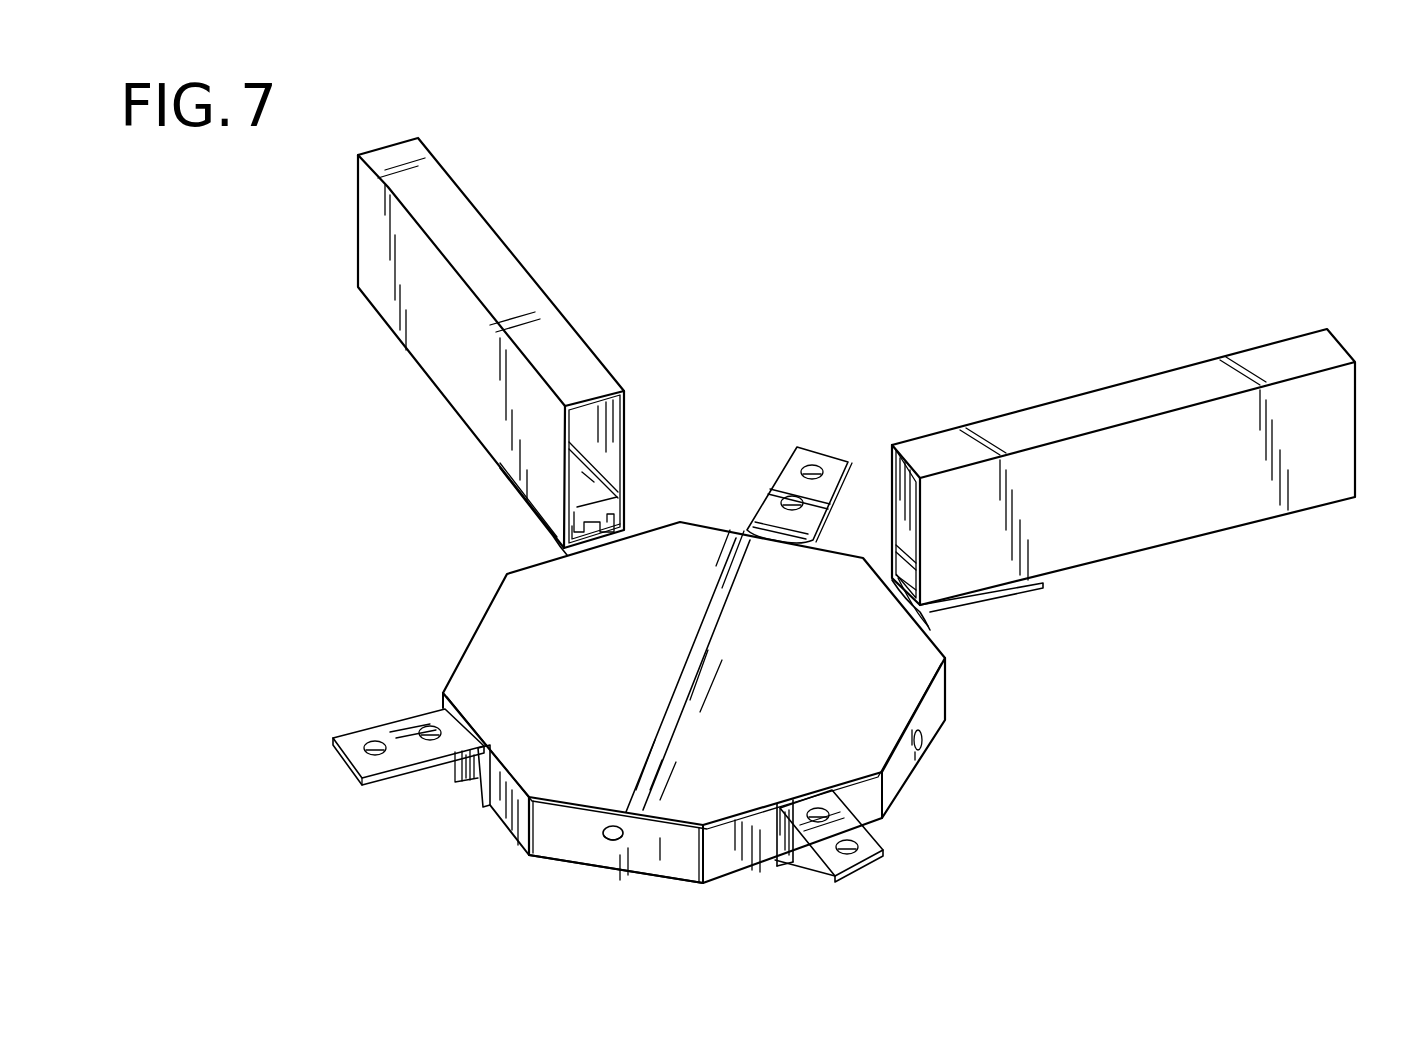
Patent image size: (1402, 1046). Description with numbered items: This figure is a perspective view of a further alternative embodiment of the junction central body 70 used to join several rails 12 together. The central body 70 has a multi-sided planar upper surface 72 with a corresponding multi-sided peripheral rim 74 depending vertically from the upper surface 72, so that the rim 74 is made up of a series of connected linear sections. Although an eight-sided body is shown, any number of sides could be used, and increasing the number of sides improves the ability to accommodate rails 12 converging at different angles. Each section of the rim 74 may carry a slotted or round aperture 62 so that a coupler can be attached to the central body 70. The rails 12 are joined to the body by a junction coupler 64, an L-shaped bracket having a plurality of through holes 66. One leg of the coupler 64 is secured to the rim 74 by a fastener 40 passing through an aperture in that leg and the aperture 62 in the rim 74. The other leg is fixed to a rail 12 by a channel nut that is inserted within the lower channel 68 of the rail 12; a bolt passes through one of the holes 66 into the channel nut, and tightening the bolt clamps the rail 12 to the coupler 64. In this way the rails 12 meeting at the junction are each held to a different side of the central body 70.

The rail 12 is at (493, 258).
The fastener 40 is at (455, 770).
The aperture 62 is at (608, 845).
The junction coupler 64 is at (857, 875).
The through holes 66 is at (857, 842).
The lower channel 68 is at (617, 513).
The junction central body 70 is at (424, 591).
The planar upper surface 72 is at (898, 660).
The peripheral rim 74 is at (560, 838).